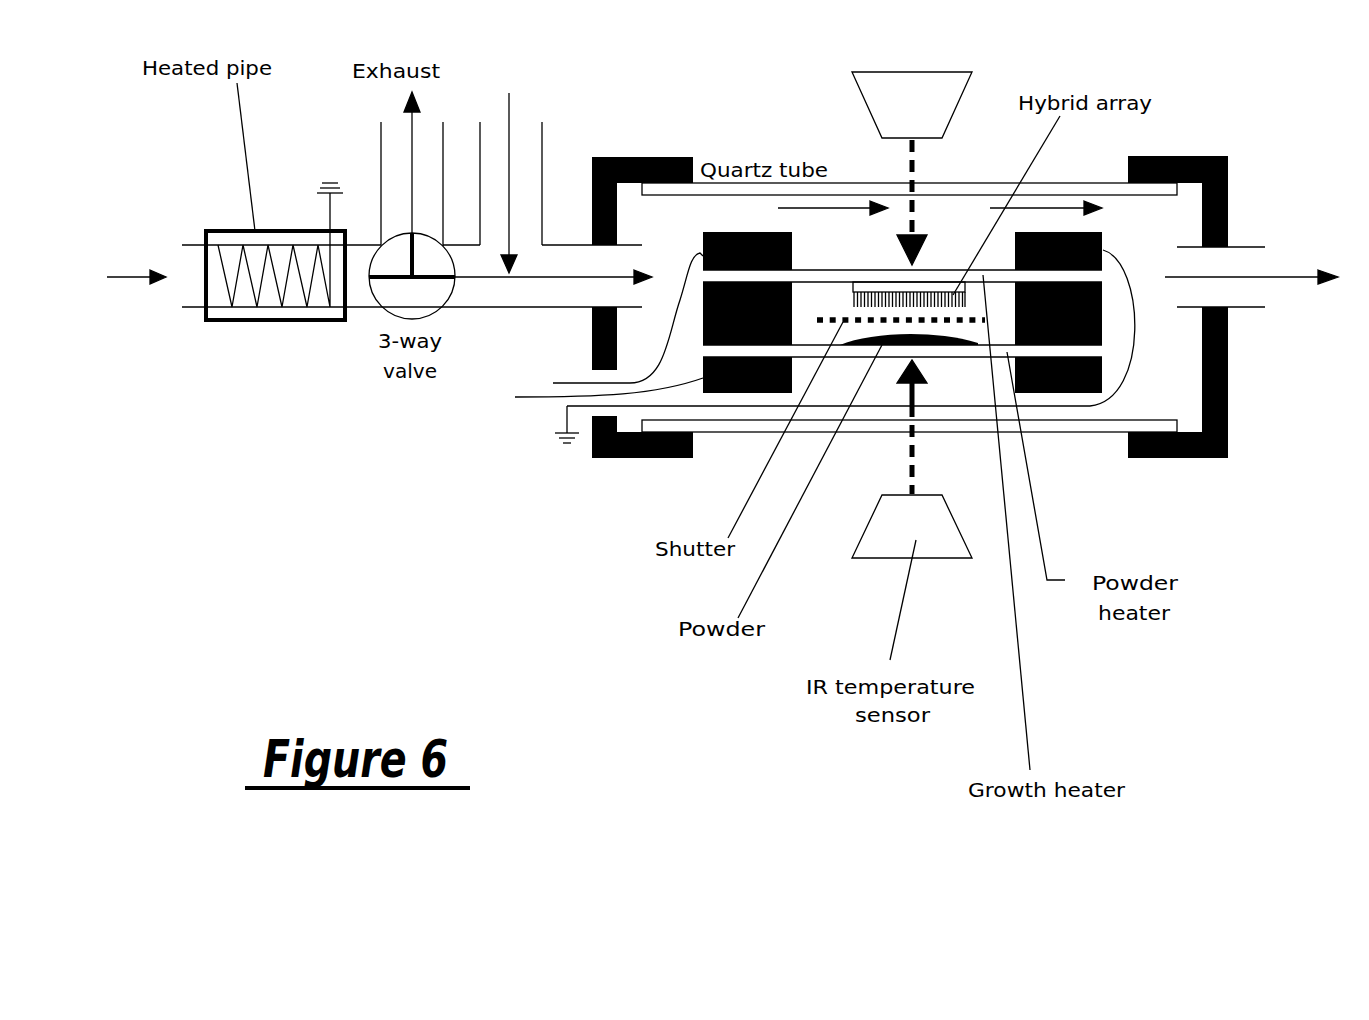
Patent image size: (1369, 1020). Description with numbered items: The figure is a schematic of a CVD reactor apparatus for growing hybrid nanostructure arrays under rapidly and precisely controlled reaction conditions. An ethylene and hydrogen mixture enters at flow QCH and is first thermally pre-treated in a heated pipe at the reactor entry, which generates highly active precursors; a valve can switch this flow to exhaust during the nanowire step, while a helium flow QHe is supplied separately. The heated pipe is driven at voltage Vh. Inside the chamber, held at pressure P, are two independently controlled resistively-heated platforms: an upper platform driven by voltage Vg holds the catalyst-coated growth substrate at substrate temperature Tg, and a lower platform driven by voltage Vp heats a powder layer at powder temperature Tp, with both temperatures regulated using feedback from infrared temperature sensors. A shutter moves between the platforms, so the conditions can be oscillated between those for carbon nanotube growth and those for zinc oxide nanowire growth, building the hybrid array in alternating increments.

The C2H4/H2 flow QCH is at (367, 300).
The heated pipe heater voltage Vh is at (218, 245).
The He flow QHe is at (527, 157).
The chamber pressure P is at (876, 213).
The growth heater voltage Vg is at (612, 322).
The powder heater voltage Vp is at (591, 396).
The substrate temperature Tg is at (912, 170).
The powder temperature Tp is at (912, 459).